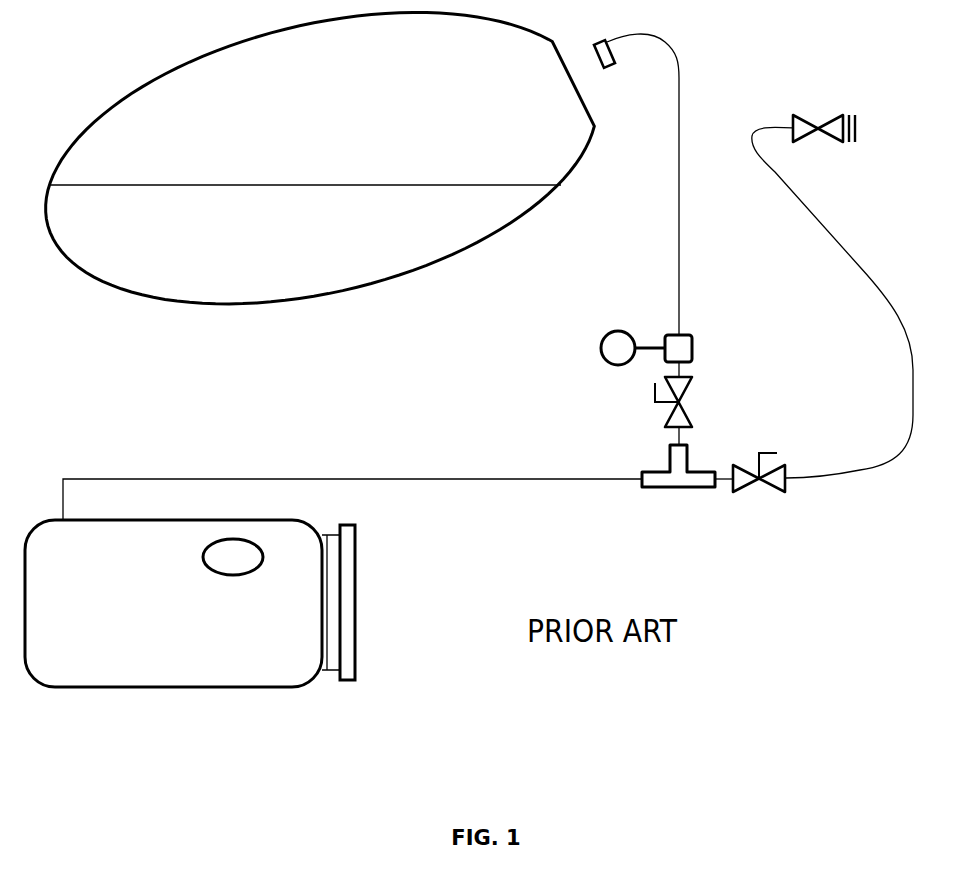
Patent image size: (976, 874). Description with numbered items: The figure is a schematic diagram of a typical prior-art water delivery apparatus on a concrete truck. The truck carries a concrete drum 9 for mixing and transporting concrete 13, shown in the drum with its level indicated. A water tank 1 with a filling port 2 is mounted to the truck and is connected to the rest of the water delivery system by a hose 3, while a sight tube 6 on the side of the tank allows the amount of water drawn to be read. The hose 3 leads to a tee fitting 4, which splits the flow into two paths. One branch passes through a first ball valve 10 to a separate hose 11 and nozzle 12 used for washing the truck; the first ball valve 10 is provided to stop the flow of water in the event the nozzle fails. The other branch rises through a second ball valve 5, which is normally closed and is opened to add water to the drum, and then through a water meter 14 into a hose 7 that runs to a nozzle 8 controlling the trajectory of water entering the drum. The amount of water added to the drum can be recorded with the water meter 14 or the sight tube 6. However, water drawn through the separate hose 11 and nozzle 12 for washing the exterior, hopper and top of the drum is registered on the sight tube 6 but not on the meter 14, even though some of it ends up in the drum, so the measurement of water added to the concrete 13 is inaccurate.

The water tank 1 is at (173, 603).
The filling port 2 is at (244, 557).
The hose 3 is at (352, 486).
The tee fitting 4 is at (687, 479).
The second ball valve 5 is at (682, 411).
The sight tube 6 is at (348, 602).
The hose 7 is at (658, 184).
The nozzle 8 is at (609, 66).
The concrete drum 9 is at (320, 158).
The first ball valve 10 is at (759, 456).
The separate hose 11 is at (846, 302).
The nozzle 12 is at (824, 114).
The concrete 13 is at (306, 211).
The water meter 14 is at (660, 354).